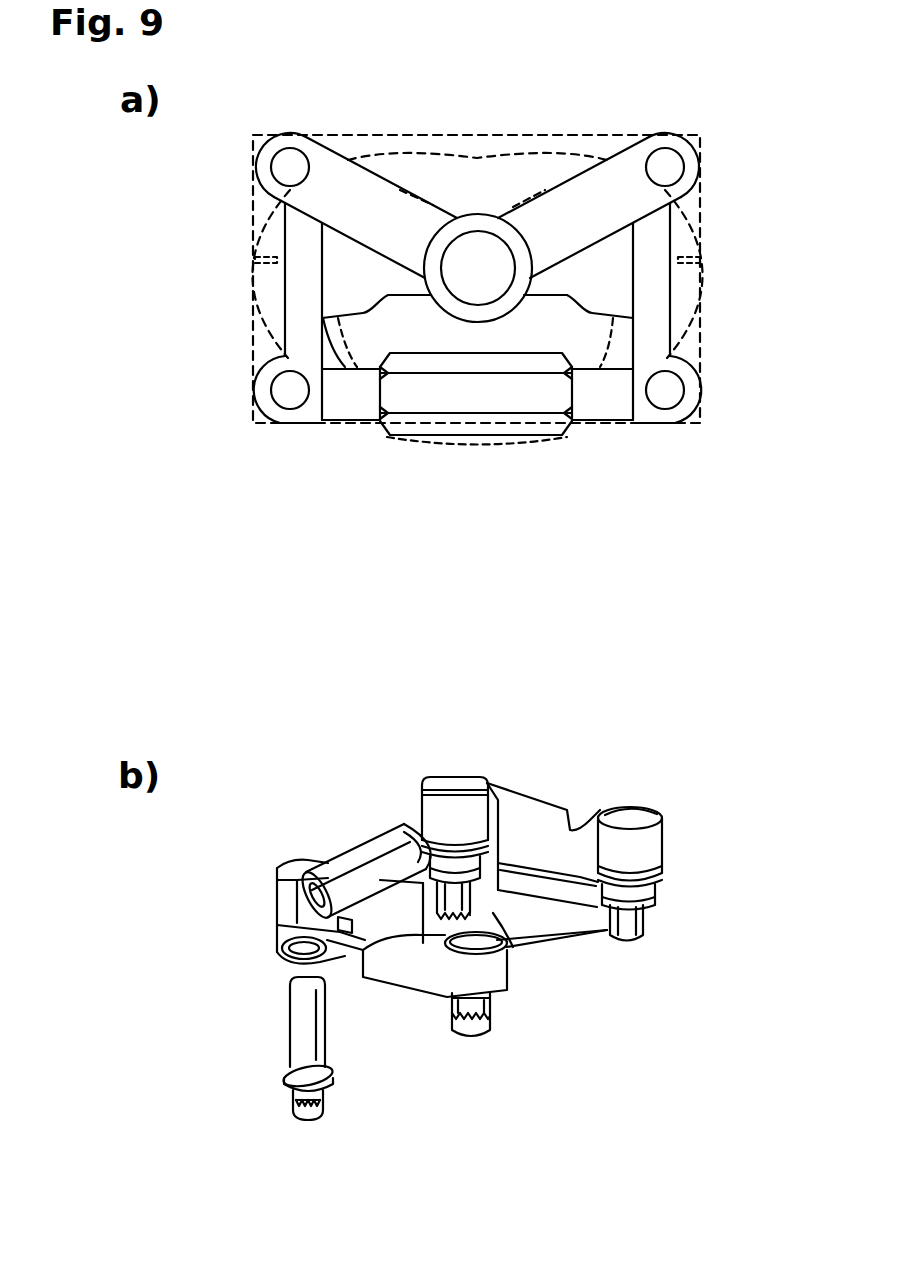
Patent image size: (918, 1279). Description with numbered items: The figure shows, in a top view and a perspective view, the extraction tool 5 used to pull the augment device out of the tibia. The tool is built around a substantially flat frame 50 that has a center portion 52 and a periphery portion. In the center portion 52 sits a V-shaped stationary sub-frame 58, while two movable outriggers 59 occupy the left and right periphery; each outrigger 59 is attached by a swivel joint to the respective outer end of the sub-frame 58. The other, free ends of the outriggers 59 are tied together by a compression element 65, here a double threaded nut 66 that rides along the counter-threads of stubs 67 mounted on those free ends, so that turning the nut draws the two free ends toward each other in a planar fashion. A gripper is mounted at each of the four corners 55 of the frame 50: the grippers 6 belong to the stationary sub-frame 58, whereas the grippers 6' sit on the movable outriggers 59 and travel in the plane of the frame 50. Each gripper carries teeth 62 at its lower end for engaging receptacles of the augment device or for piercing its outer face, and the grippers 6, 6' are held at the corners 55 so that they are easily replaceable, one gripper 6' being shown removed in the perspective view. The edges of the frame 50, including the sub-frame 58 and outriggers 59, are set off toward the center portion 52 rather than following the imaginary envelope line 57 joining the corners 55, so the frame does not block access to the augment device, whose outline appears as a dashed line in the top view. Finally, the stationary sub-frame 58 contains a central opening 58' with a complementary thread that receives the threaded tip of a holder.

The extraction tool 5 is at (686, 816).
The gripper 6 is at (471, 607).
The movable gripper 6' is at (476, 745).
The substantially flat frame 50 is at (558, 922).
The center portion 52 is at (462, 224).
The corners 55 is at (273, 138).
The imaginary envelope line 57 is at (373, 134).
The V-shaped stationary sub-frame 58 is at (477, 477).
The central opening 58' is at (479, 190).
The movable outriggers 59 is at (300, 290).
The teeth 62 is at (330, 1103).
The compression element 65 is at (395, 428).
The double threaded nut 66 is at (500, 402).
The stubs 67 is at (352, 405).